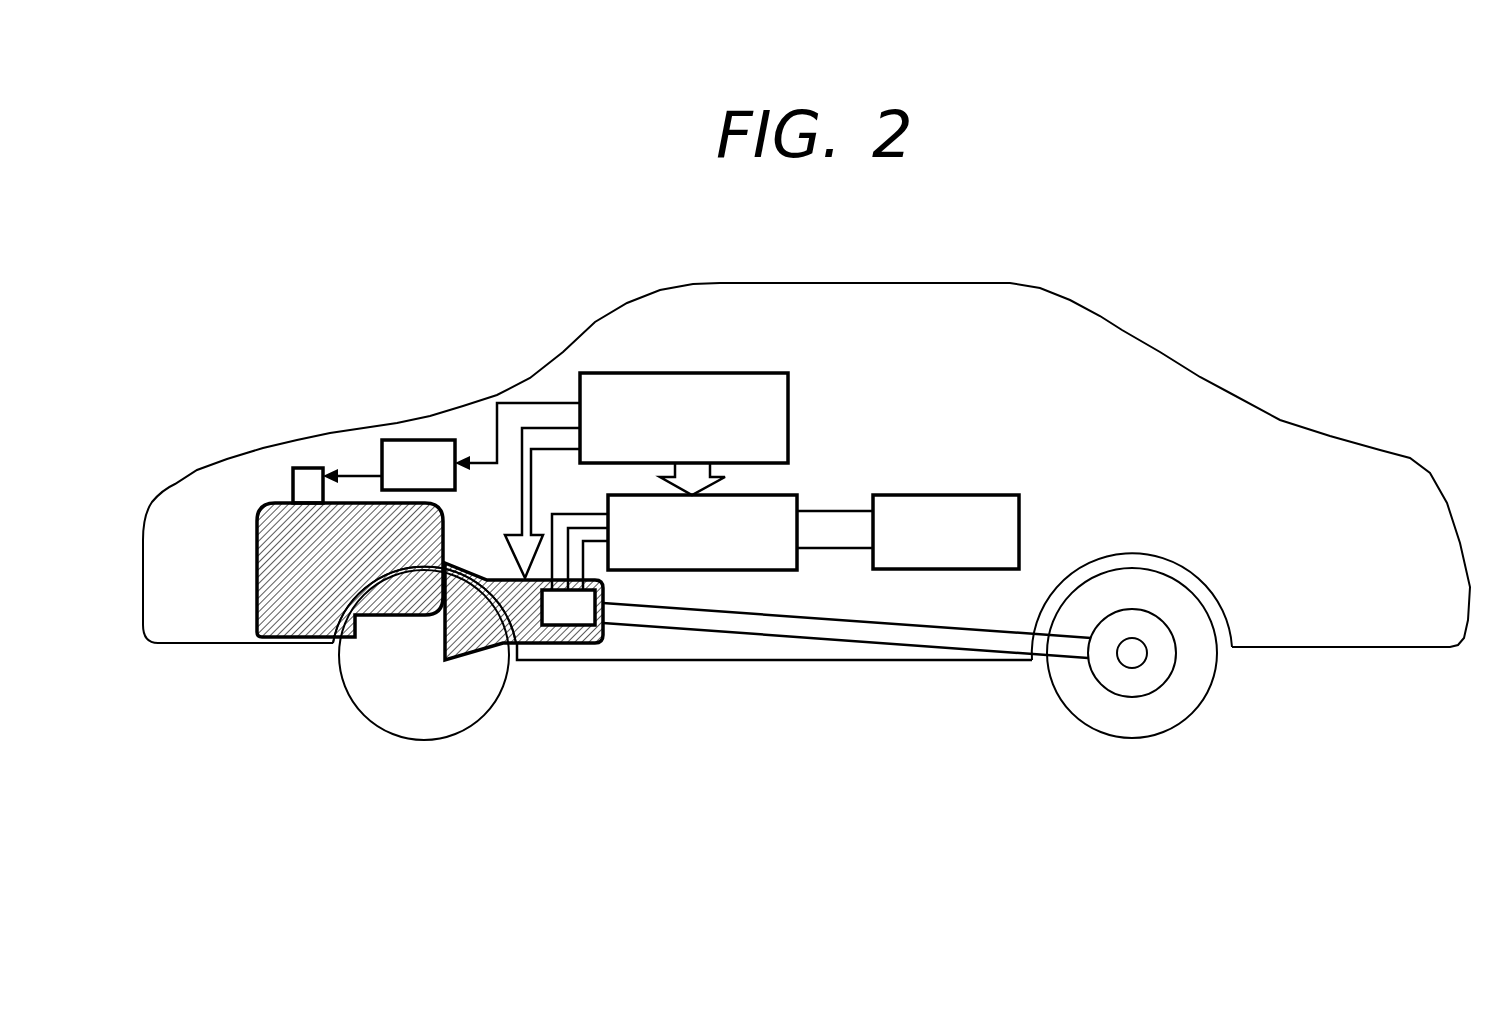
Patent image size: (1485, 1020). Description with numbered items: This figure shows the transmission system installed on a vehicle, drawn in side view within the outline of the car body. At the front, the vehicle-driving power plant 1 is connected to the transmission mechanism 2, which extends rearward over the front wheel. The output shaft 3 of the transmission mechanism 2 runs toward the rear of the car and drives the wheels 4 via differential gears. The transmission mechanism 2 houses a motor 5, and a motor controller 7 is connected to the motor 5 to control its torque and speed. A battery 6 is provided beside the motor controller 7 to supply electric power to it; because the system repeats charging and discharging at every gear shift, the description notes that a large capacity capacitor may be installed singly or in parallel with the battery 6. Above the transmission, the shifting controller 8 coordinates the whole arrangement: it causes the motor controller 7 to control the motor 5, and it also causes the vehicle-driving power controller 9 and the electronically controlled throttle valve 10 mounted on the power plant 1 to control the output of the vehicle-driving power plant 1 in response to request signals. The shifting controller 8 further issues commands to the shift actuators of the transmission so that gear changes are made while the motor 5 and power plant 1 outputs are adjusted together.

The vehicle-driving power plant 1 is at (257, 550).
The transmission mechanism 2 is at (533, 643).
The output shaft 3 is at (767, 642).
The wheels 4 is at (1157, 722).
The motor 5 is at (577, 643).
The battery 6 is at (978, 505).
The motor controller 7 is at (800, 500).
The shifting controller 8 is at (632, 373).
The vehicle-driving power controller 9 is at (407, 440).
The electronically controlled throttle valve 10 is at (303, 468).